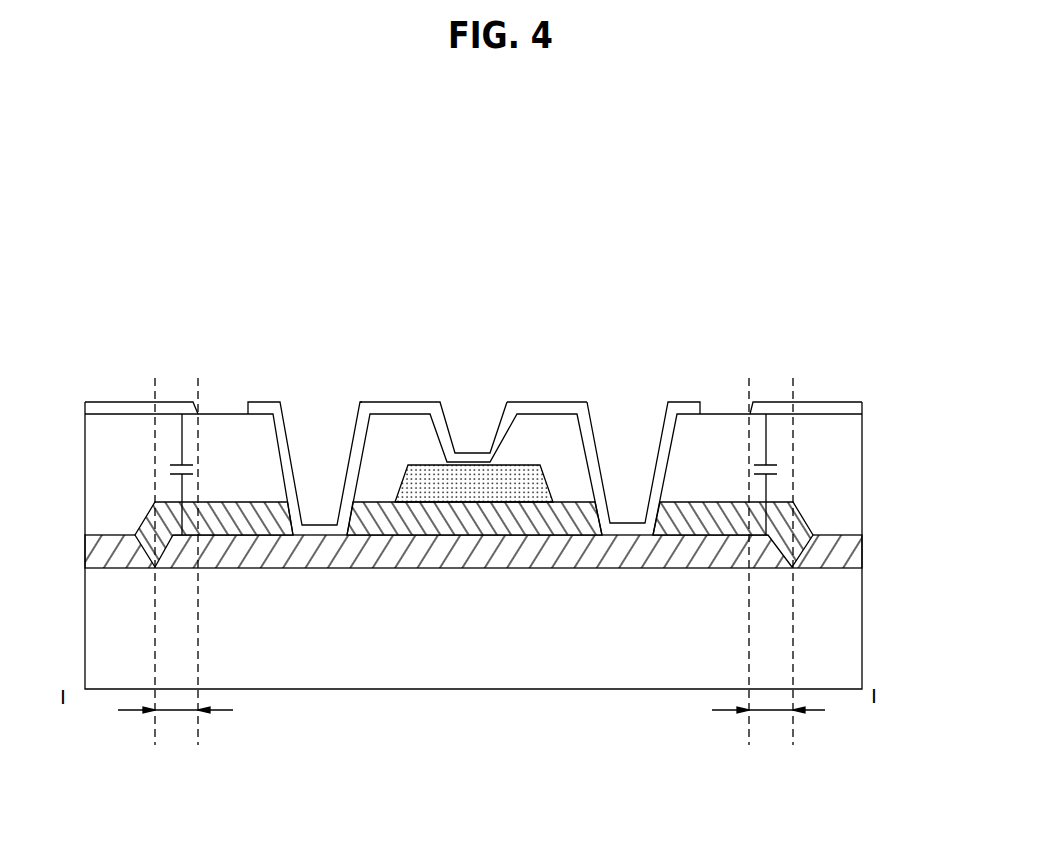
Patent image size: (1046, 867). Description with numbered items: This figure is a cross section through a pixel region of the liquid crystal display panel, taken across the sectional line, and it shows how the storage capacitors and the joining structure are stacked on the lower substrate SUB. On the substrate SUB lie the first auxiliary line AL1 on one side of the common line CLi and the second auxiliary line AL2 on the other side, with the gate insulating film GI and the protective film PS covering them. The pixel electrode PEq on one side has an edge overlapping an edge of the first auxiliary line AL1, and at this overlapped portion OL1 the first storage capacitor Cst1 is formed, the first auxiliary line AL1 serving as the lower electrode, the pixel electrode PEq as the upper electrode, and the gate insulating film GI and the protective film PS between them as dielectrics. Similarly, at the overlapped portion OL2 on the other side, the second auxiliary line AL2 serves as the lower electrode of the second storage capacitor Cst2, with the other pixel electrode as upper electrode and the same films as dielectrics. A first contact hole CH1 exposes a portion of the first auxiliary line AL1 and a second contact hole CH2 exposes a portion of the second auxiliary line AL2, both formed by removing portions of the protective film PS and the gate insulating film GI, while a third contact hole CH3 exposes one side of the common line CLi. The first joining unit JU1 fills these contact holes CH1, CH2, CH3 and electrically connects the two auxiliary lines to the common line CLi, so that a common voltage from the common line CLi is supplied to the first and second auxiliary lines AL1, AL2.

The pixel electrode PEq is at (113, 405).
The first contact hole CH1 is at (318, 417).
The second contact hole CH2 is at (633, 420).
The third contact hole CH3 is at (477, 417).
The first joining unit JU1 is at (548, 410).
The first storage capacitor Cst1 is at (207, 474).
The second storage capacitor Cst2 is at (792, 474).
The protective film PS is at (850, 470).
The gate insulating film GI is at (850, 552).
The first auxiliary line AL1 is at (182, 553).
The second auxiliary line AL2 is at (770, 555).
The lower substrate SUB is at (850, 622).
The common line CLi is at (515, 485).
The overlapped portion OL1 is at (175, 561).
The overlapped portion OL2 is at (768, 561).